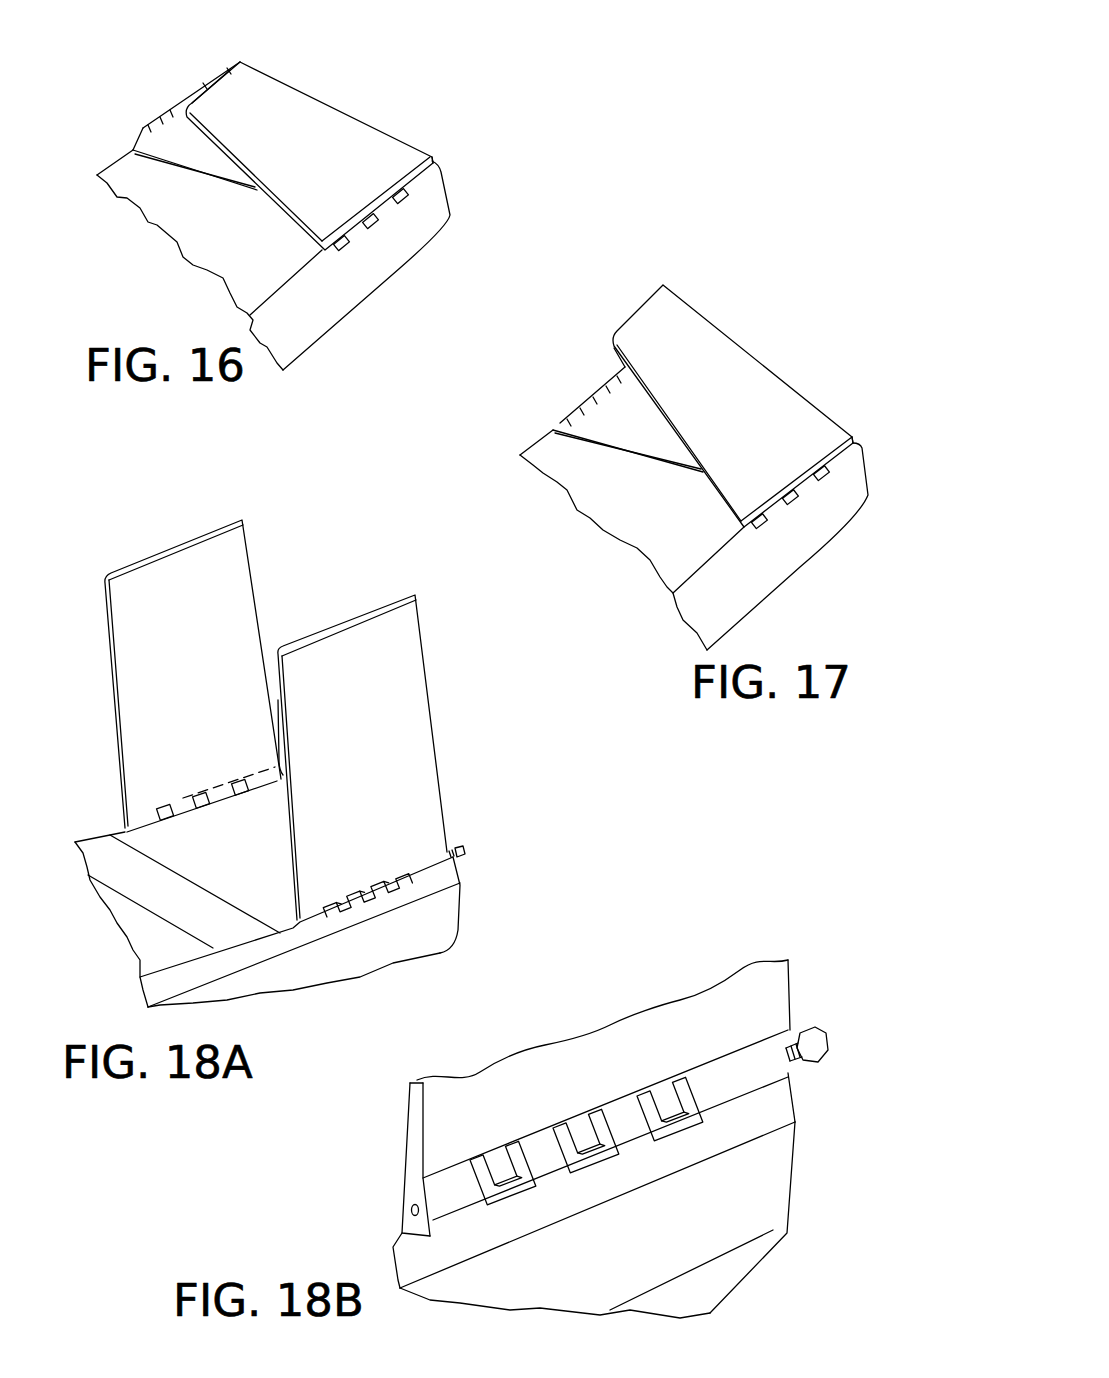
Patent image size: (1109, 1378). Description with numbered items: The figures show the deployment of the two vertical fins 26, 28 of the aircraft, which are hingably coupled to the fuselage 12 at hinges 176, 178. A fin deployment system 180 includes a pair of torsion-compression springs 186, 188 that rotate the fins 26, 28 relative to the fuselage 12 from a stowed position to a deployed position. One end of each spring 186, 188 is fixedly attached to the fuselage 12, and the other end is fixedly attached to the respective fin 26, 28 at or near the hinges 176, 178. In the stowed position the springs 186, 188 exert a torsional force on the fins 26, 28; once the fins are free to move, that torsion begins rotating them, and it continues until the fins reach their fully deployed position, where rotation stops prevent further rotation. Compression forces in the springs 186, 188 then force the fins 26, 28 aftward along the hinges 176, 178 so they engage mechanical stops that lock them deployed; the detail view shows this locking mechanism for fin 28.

In FIG. 16, the fuselage 12 is at (178, 218).
In FIG. 17, the fuselage 12 is at (600, 493).
In FIG. 18A, the fuselage 12 is at (140, 935).
In FIG. 18B, the fuselage 12 is at (770, 1170).
In FIG. 16, the vertical fin 26 is at (175, 145).
In FIG. 17, the vertical fin 26 is at (607, 413).
In FIG. 18A, the vertical fin 26 is at (212, 593).
In FIG. 16, the vertical fin 28 is at (315, 122).
In FIG. 17, the vertical fin 28 is at (753, 382).
In FIG. 18A, the vertical fin 28 is at (398, 683).
In FIG. 18B, the vertical fin 28 is at (710, 1012).
In FIG. 16, the hinge 176 is at (201, 76).
In FIG. 17, the hinge 176 is at (597, 371).
In FIG. 18A, the hinge 176 is at (176, 795).
In FIG. 16, the hinge 178 is at (424, 193).
In FIG. 17, the hinge 178 is at (839, 485).
In FIG. 18A, the hinge 178 is at (468, 877).
In FIG. 18B, the hinge 178 is at (810, 1082).
In FIG. 16, the fin deployment system 180 is at (176, 70).
In FIG. 17, the fin deployment system 180 is at (589, 369).
In FIG. 16, the torsion-compression spring 186 is at (228, 72).
In FIG. 18A, the torsion-compression spring 186 is at (278, 752).
In FIG. 16, the torsion-compression spring 188 is at (435, 163).
In FIG. 17, the torsion-compression spring 188 is at (857, 438).
In FIG. 18A, the torsion-compression spring 188 is at (457, 848).
In FIG. 18B, the torsion-compression spring 188 is at (812, 1040).